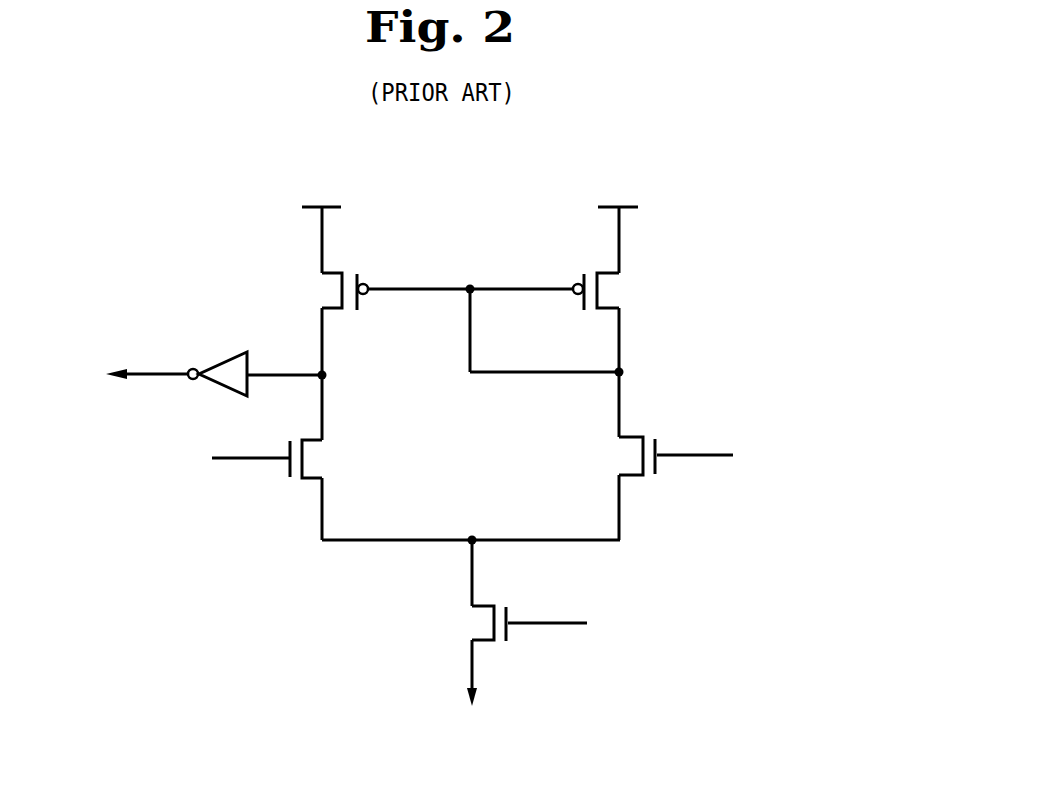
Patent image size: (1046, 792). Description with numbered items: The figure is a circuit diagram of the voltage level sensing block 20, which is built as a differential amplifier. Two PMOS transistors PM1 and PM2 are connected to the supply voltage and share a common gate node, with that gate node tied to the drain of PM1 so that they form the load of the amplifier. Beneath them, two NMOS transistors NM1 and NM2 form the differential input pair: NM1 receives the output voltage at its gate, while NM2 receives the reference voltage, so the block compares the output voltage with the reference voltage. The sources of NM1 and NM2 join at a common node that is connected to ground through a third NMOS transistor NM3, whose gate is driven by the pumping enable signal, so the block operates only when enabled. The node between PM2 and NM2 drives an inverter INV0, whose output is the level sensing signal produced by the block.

The voltage level sensing block 20 is at (770, 152).
The PMOS transistor PM1 is at (564, 291).
The PMOS transistor PM2 is at (376, 291).
The NMOS transistor NM1 is at (656, 456).
The NMOS transistor NM2 is at (287, 459).
The NMOS transistor NM3 is at (552, 656).
The inverter INV0 is at (226, 358).